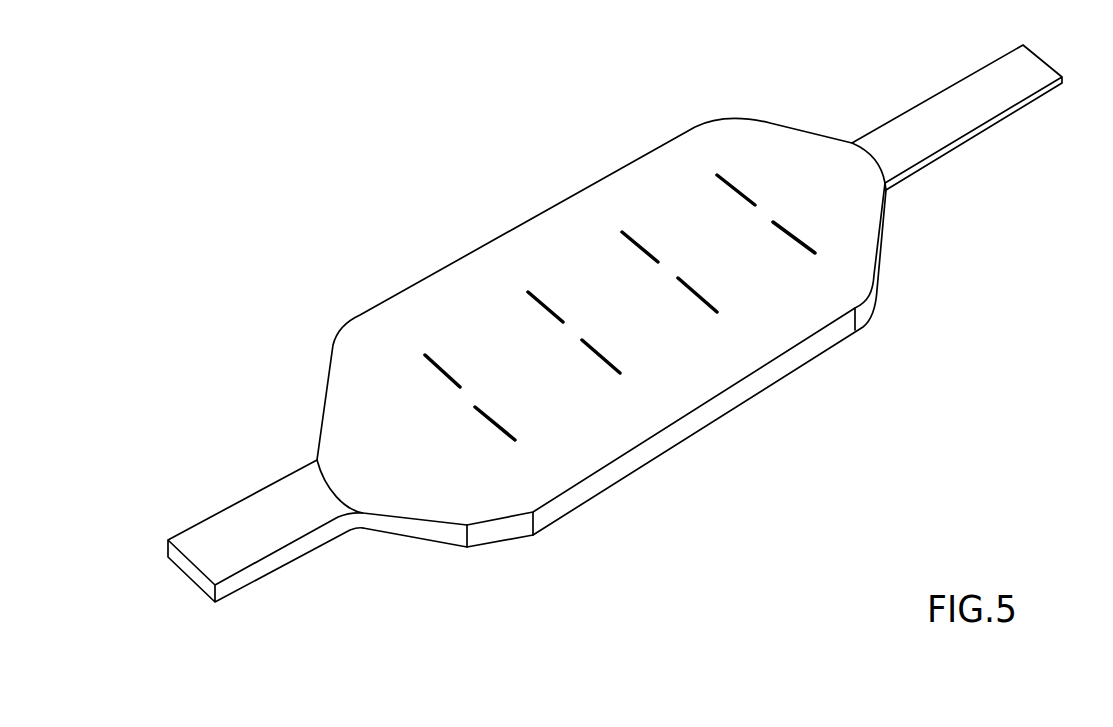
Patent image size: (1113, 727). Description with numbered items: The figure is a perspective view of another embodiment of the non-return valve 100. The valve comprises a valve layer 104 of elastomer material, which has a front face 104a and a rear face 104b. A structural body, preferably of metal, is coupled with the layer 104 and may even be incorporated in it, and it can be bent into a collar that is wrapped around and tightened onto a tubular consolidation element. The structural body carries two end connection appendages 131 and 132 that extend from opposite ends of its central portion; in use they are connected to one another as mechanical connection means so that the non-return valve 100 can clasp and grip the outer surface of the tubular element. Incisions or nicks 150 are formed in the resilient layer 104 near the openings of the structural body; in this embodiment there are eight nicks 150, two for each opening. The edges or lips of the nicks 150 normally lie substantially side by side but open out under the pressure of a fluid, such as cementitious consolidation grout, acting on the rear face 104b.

The non-return valve 100 is at (404, 217).
The valve layer 104 is at (820, 285).
The front face 104a is at (525, 242).
The rear face 104b is at (674, 452).
The end connection appendage 131 is at (253, 505).
The end connection appendage 132 is at (942, 103).
The nicks 150 is at (785, 232).